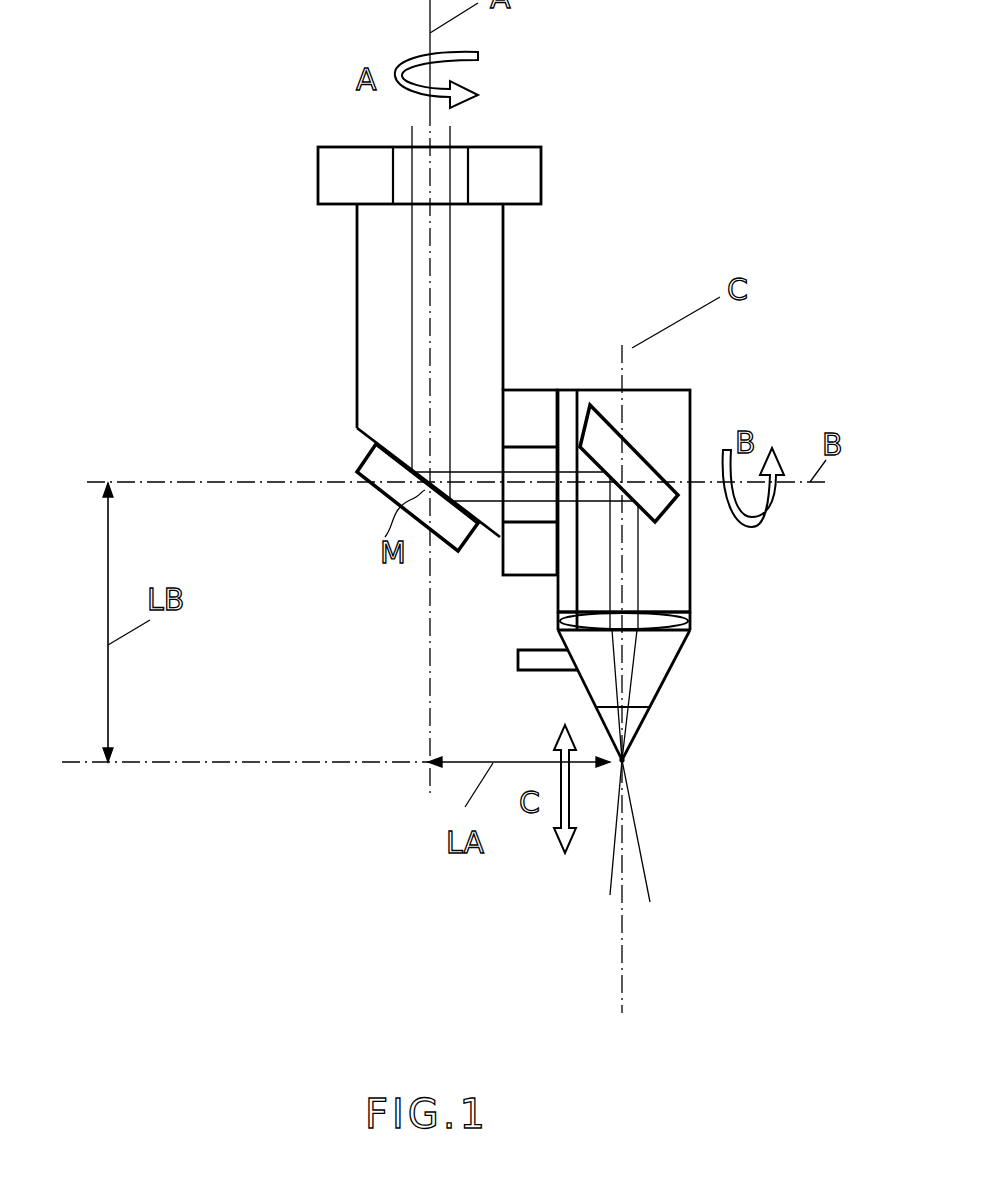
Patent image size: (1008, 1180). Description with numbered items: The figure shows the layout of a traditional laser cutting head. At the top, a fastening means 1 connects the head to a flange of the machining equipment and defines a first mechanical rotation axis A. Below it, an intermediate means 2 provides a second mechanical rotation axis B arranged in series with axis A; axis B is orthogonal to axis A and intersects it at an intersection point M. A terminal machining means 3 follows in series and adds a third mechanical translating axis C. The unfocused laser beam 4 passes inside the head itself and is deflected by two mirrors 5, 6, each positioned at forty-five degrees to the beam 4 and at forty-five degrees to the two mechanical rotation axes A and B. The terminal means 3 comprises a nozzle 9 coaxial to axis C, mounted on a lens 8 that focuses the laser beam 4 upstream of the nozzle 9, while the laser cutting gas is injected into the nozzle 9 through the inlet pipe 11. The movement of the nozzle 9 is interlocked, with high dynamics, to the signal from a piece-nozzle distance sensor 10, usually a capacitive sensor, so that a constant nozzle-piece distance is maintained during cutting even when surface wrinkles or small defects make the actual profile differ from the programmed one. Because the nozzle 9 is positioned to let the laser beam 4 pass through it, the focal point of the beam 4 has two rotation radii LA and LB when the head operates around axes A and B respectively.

The fastening means 1 is at (532, 175).
The intermediate means 2 is at (532, 400).
The terminal machining means 3 is at (665, 577).
The laser beam 4 is at (412, 285).
The mirror 5 is at (395, 495).
The mirror 6 is at (640, 470).
The lens 8 is at (651, 626).
The nozzle 9 is at (692, 648).
The piece-nozzle distance sensor 10 is at (640, 730).
The inlet pipe 11 is at (518, 658).